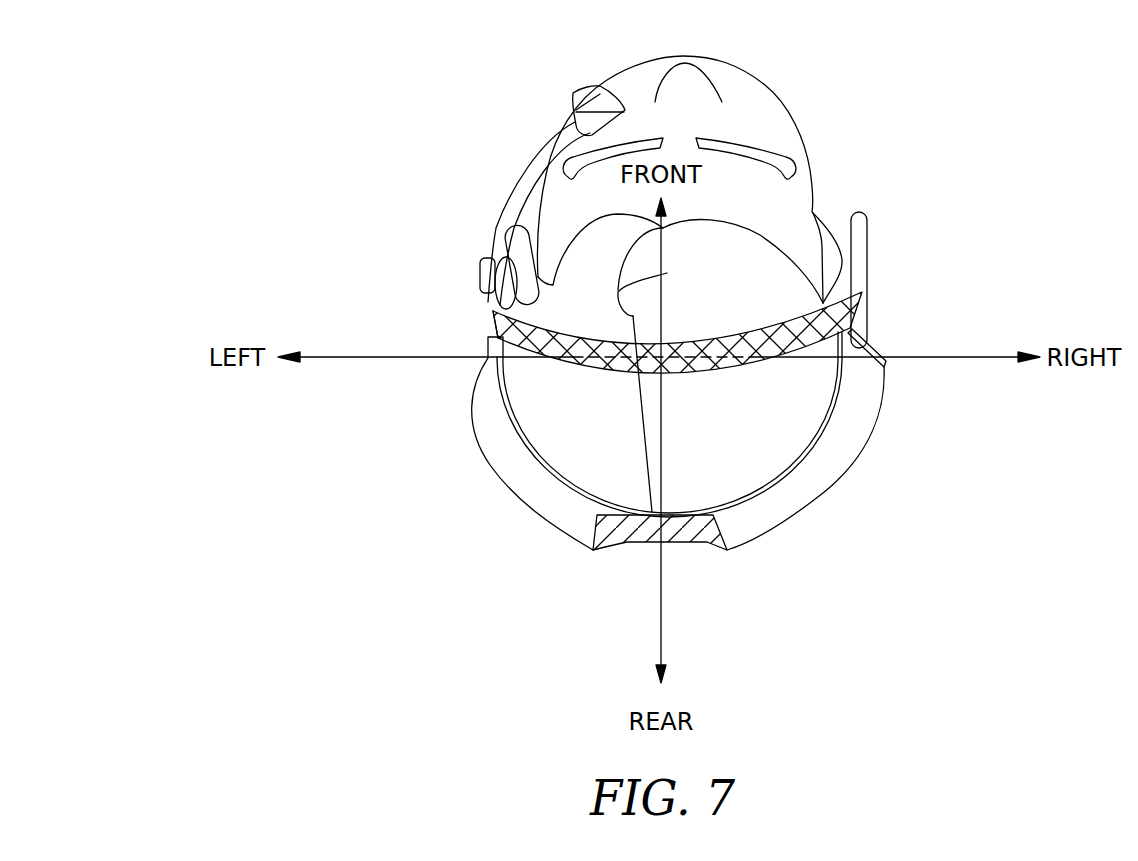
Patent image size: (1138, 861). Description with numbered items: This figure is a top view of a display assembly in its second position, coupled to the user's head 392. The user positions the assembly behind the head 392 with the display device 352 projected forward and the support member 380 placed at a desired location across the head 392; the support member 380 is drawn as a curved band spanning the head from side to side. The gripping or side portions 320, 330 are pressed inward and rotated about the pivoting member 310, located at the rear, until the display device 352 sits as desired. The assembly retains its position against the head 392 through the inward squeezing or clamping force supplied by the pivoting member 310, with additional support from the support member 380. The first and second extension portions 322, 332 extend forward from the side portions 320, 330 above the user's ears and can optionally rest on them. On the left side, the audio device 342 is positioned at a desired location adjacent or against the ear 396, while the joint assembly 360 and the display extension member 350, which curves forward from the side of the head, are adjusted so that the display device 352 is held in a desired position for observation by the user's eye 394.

The pivoting member 310 is at (693, 535).
The side portion 320 is at (503, 495).
The first extension portion 322 is at (495, 341).
The side portion 330 is at (828, 493).
The second extension portion 332 is at (869, 247).
The audio device 342 is at (495, 313).
The display extension member 350 is at (530, 160).
The display device 352 is at (585, 85).
The joint assembly 360 is at (478, 266).
The support member 380 is at (740, 342).
The user's head 392 is at (799, 127).
The user's eye 394 is at (630, 140).
The user's ear 396 is at (493, 225).